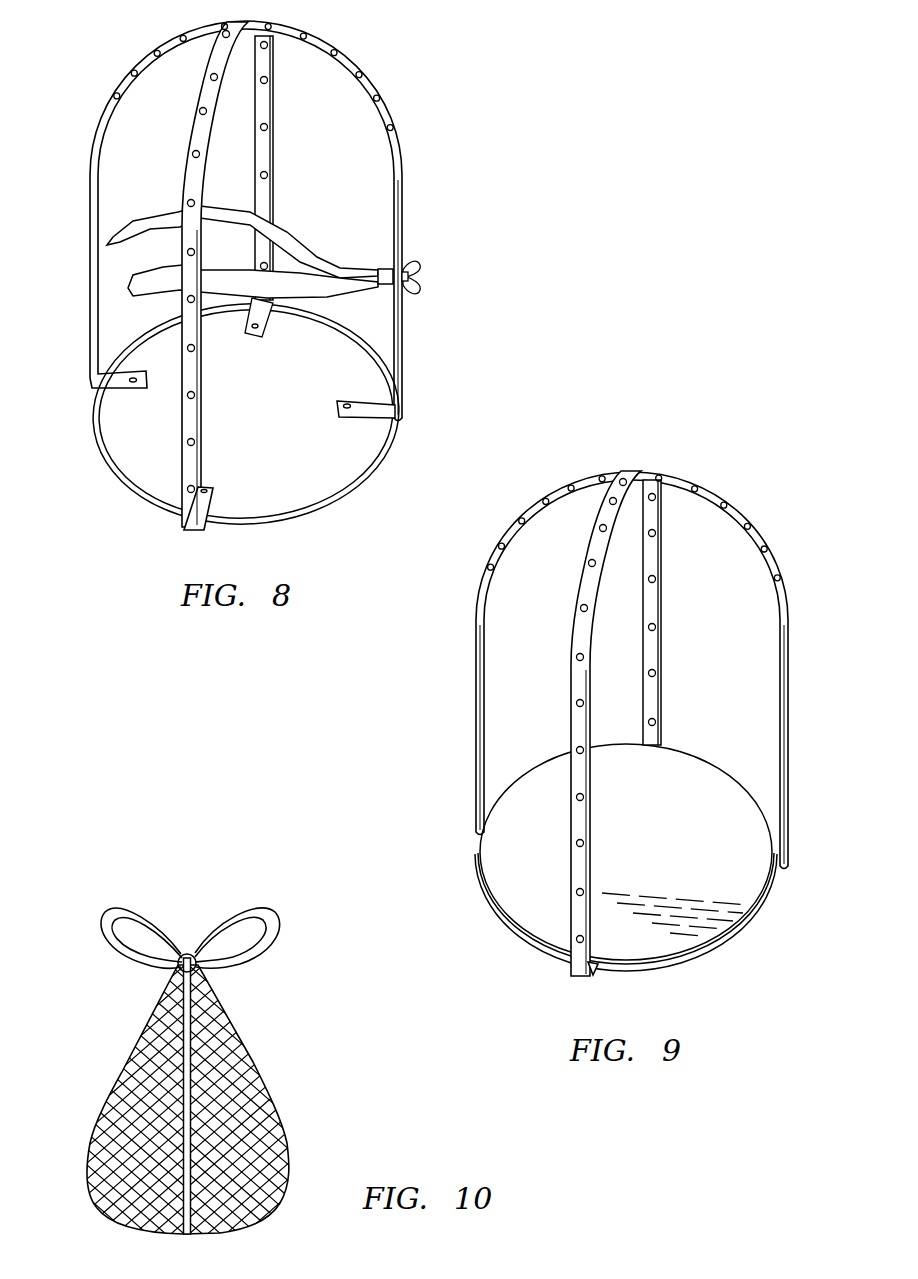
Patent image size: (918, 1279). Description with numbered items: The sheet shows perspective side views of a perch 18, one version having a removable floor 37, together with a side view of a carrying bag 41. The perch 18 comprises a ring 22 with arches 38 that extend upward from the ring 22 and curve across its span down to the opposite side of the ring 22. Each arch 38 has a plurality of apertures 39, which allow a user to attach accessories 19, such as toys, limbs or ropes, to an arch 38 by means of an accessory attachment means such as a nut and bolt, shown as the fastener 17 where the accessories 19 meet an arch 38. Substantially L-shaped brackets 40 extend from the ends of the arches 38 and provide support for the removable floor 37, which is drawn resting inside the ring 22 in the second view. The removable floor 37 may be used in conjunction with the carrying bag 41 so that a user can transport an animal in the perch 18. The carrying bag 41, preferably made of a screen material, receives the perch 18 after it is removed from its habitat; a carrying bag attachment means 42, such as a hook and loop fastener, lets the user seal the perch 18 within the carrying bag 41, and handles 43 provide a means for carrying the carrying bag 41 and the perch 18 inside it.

In FIG. 8, the wing nut 17 is at (421, 269).
In FIG. 8, the perch 18 is at (422, 92).
In FIG. 9, the perch 18 is at (685, 438).
In FIG. 8, the accessories 19 is at (312, 243).
In FIG. 8, the ring 22 is at (122, 488).
In FIG. 9, the ring 22 is at (538, 953).
In FIG. 9, the removable floor 37 is at (672, 822).
In FIG. 8, the arch 38 is at (277, 140).
In FIG. 9, the arch 38 is at (662, 592).
In FIG. 8, the apertures 39 is at (183, 36).
In FIG. 9, the apertures 39 is at (570, 486).
In FIG. 8, the L-shaped bracket 40 is at (350, 417).
In FIG. 10, the carrying bag 41 is at (279, 1004).
In FIG. 10, the carrying bag attachment means 42 is at (181, 976).
In FIG. 10, the handles 43 is at (112, 915).